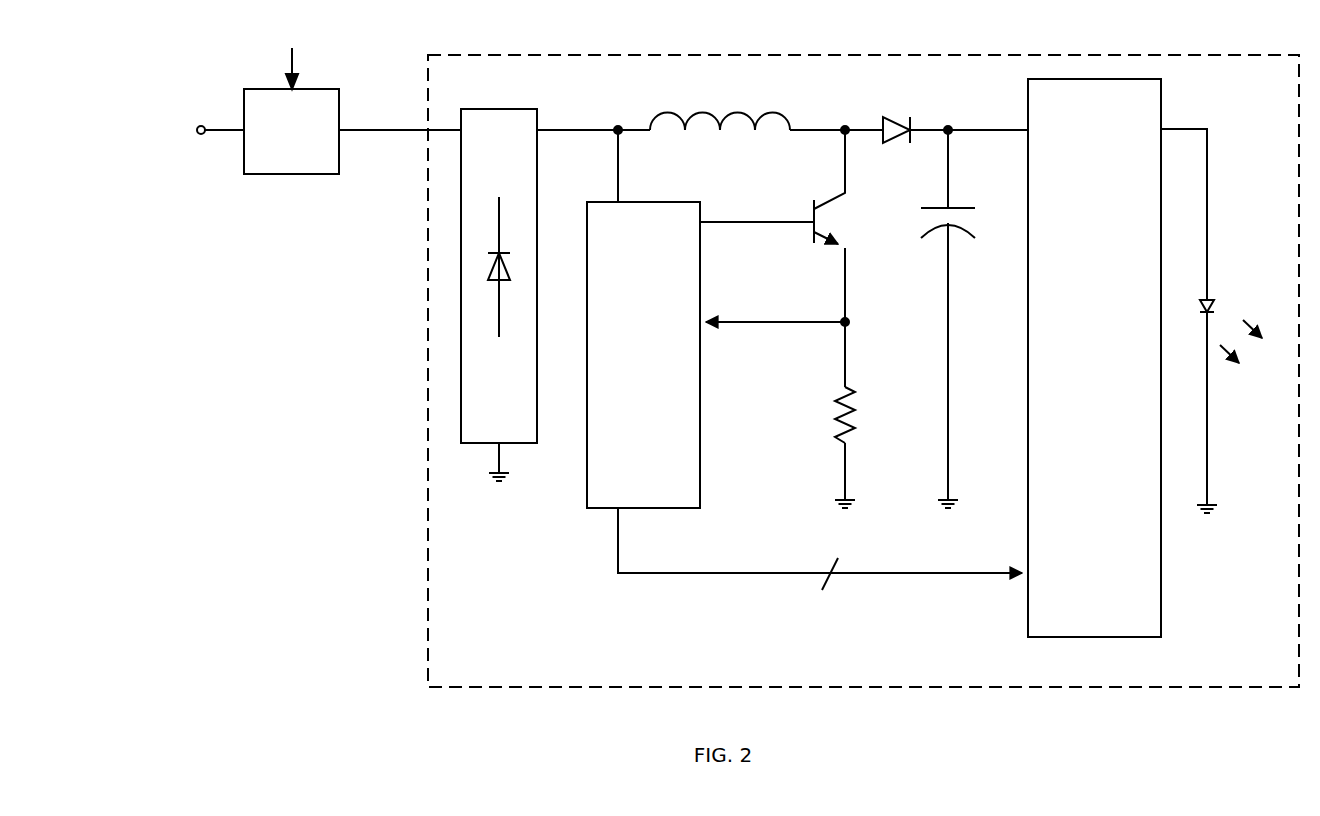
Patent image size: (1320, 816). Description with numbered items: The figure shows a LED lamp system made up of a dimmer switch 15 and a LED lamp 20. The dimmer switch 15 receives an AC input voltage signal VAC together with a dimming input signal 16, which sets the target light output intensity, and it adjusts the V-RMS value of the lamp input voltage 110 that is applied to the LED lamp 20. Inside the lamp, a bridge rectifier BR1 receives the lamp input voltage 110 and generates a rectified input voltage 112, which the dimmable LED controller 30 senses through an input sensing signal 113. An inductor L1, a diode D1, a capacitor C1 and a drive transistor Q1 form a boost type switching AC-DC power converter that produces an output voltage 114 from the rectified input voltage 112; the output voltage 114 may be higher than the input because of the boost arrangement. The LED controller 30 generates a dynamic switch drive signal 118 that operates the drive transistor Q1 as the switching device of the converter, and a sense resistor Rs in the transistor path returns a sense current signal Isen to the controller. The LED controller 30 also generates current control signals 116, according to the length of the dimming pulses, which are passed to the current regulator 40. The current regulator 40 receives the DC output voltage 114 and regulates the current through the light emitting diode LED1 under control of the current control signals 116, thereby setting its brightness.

The dimmer switch 15 is at (291, 131).
The dimming input signal 16 is at (292, 55).
The LED lamp 20 is at (428, 655).
The dimmable LED controller 30 is at (643, 355).
The current regulator 40 is at (1094, 358).
The lamp input voltage 110 is at (357, 130).
The rectified input voltage 112 is at (591, 130).
The input sensing signal 113 is at (618, 177).
The output voltage 114 is at (948, 130).
The current control signals 116 is at (728, 573).
The dynamic switch drive signal 118 is at (732, 222).
The AC input voltage signal VAC is at (196, 130).
The bridge rectifier BR1 is at (499, 276).
The inductor L1 is at (766, 107).
The diode D1 is at (955, 111).
The capacitor C1 is at (962, 319).
The drive transistor Q1 is at (842, 258).
The sense resistor Rs is at (861, 447).
The sense current signal Isen is at (777, 331).
The light emitting diode LED1 is at (1211, 321).